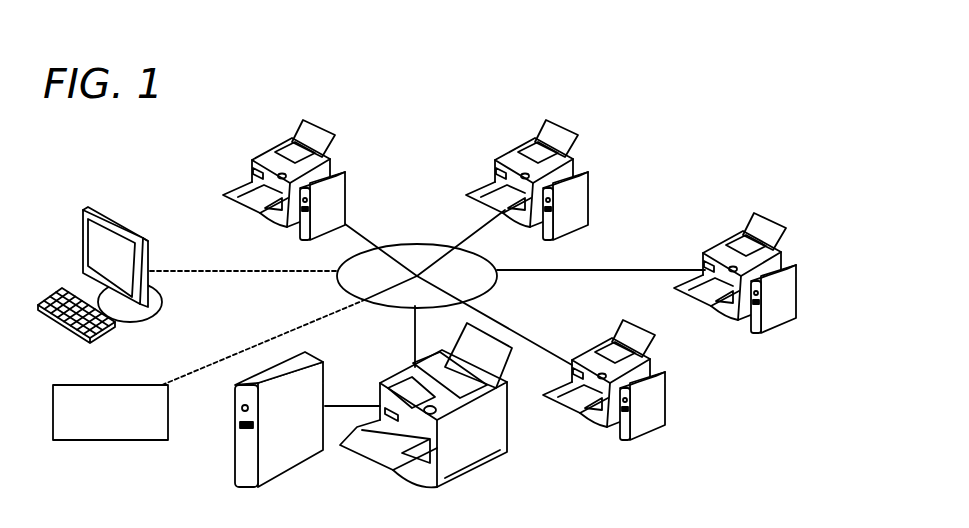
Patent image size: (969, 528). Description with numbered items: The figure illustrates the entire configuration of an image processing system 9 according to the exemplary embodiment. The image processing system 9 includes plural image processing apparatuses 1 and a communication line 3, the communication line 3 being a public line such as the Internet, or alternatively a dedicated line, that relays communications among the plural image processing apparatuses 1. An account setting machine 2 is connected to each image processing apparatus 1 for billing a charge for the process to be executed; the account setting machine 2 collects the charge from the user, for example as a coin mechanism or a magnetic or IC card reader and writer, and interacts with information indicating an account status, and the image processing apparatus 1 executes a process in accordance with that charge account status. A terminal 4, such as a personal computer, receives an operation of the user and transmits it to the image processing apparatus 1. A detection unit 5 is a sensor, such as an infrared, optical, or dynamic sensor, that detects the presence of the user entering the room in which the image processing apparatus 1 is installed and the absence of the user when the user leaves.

The image processing apparatus 1 is at (323, 166).
The account setting machine 2 is at (330, 209).
The communication line 3 is at (427, 243).
The terminal 4 is at (83, 221).
The detection unit 5 is at (112, 441).
The image processing system 9 is at (707, 414).